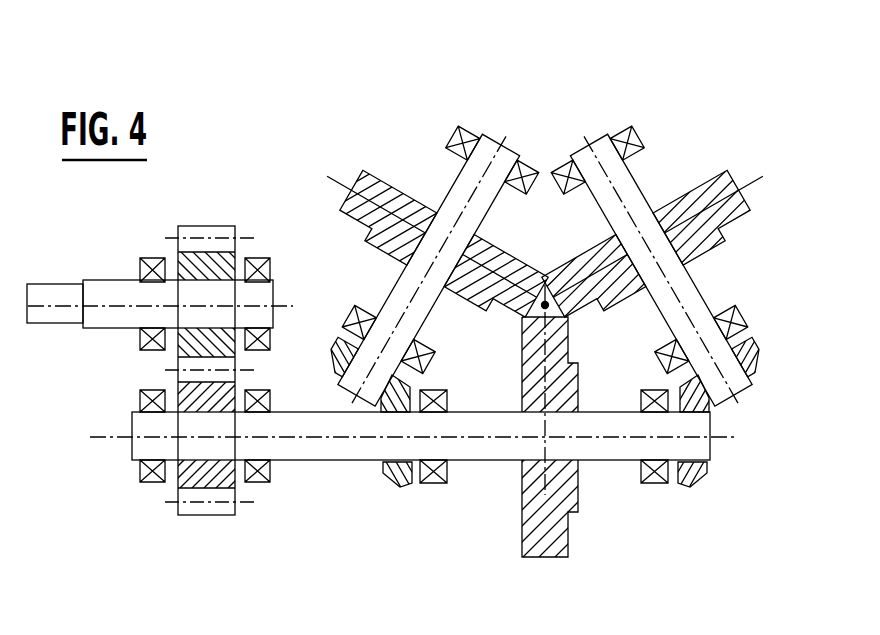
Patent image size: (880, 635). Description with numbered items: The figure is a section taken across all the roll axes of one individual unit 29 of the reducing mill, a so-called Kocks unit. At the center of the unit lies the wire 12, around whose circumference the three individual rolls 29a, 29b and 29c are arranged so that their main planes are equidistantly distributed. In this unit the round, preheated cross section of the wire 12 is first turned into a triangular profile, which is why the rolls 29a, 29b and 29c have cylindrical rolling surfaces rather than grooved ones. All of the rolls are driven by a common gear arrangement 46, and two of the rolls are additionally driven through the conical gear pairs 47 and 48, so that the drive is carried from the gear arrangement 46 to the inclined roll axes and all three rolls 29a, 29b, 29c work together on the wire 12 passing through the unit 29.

The wire 12 is at (545, 302).
The unit 29 is at (586, 95).
The roll 29a is at (374, 186).
The roll 29b is at (717, 185).
The roll 29c is at (562, 498).
The gear arrangement 46 is at (78, 412).
The conical gear pair 47 is at (352, 490).
The conical gear pair 48 is at (742, 418).